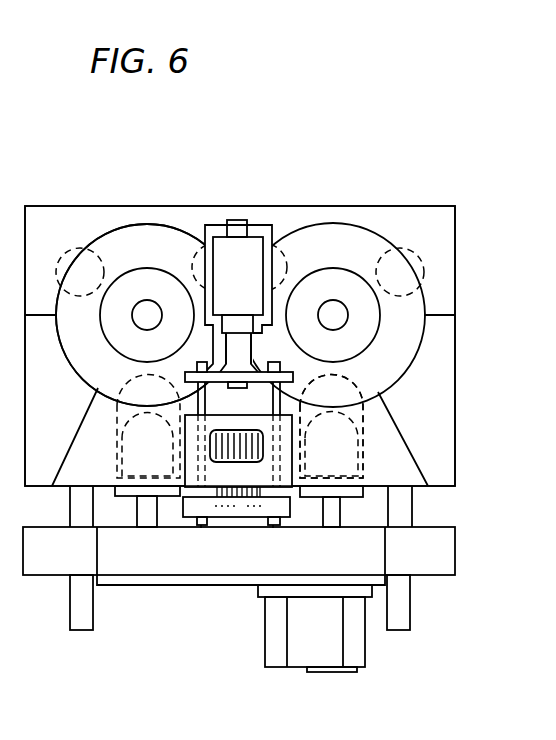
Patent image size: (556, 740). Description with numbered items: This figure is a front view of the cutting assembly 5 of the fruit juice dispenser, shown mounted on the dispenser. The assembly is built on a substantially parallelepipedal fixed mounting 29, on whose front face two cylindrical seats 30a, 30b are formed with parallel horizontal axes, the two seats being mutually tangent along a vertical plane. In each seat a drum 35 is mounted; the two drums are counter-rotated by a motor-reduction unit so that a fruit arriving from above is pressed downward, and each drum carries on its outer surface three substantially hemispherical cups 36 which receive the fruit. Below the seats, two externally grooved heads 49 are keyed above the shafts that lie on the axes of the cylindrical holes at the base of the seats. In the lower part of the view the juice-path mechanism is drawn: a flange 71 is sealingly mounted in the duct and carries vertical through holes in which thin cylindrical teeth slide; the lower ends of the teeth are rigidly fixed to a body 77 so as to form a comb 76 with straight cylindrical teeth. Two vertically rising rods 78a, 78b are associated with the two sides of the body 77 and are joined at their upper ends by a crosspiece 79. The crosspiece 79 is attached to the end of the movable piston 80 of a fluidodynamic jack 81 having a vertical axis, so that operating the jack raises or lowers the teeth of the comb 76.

The cutting assembly 5 is at (486, 263).
The fixed mounting 29 is at (457, 233).
The cylindrical seat 30a is at (170, 228).
The cylindrical seat 30b is at (346, 229).
The drum 35 is at (135, 240).
The hemispherical cup 36 is at (76, 248).
The externally grooved head 49 is at (348, 442).
The flange 71 is at (245, 428).
The comb 76 is at (296, 512).
The body 77 is at (275, 514).
The vertically rising rod 78a is at (183, 485).
The vertically rising rod 78b is at (258, 478).
The crosspiece 79 is at (260, 374).
The movable piston 80 is at (232, 343).
The fluidodynamic jack 81 is at (250, 247).